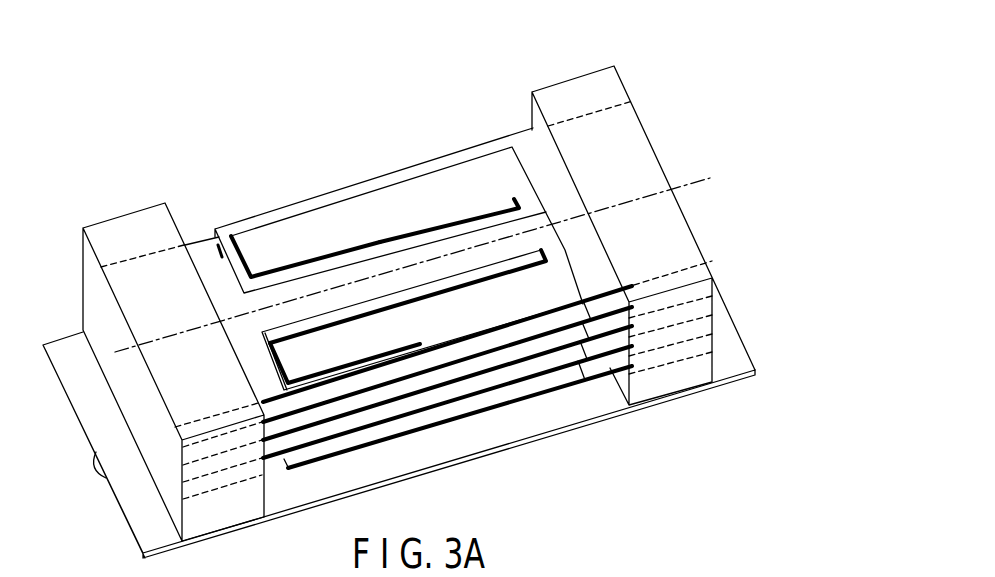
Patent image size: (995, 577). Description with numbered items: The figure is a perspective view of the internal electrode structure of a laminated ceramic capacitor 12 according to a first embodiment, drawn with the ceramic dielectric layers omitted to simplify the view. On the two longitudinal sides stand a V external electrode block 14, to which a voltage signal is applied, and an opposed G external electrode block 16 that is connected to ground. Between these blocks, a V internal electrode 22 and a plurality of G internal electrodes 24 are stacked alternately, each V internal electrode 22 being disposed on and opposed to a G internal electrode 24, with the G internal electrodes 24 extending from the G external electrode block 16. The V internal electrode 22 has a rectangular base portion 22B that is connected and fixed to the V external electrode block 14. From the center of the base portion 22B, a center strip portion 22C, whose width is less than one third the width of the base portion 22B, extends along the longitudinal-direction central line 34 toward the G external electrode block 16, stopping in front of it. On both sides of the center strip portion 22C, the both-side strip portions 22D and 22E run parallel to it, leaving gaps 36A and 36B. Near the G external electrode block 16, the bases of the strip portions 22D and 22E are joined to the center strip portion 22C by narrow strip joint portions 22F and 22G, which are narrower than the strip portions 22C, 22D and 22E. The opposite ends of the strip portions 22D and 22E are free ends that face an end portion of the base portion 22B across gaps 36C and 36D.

The laminated ceramic capacitor 12 is at (296, 178).
The V external electrode block 14 is at (128, 226).
The G external electrode block 16 is at (572, 88).
The V internal electrode 22 is at (202, 250).
The rectangular base portion 22B is at (178, 400).
The center strip portion 22C is at (482, 255).
The both-side strip portion 22D is at (367, 200).
The both-side strip portion 22E is at (452, 330).
The narrow strip joint portion 22F is at (525, 200).
The narrow strip joint portion 22G is at (562, 250).
The G internal electrode 24 is at (295, 400).
The longitudinal-direction central line 34 is at (665, 190).
The gap 36A is at (445, 226).
The gap 36B is at (408, 300).
The gap 36C is at (236, 261).
The gap 36D is at (290, 366).